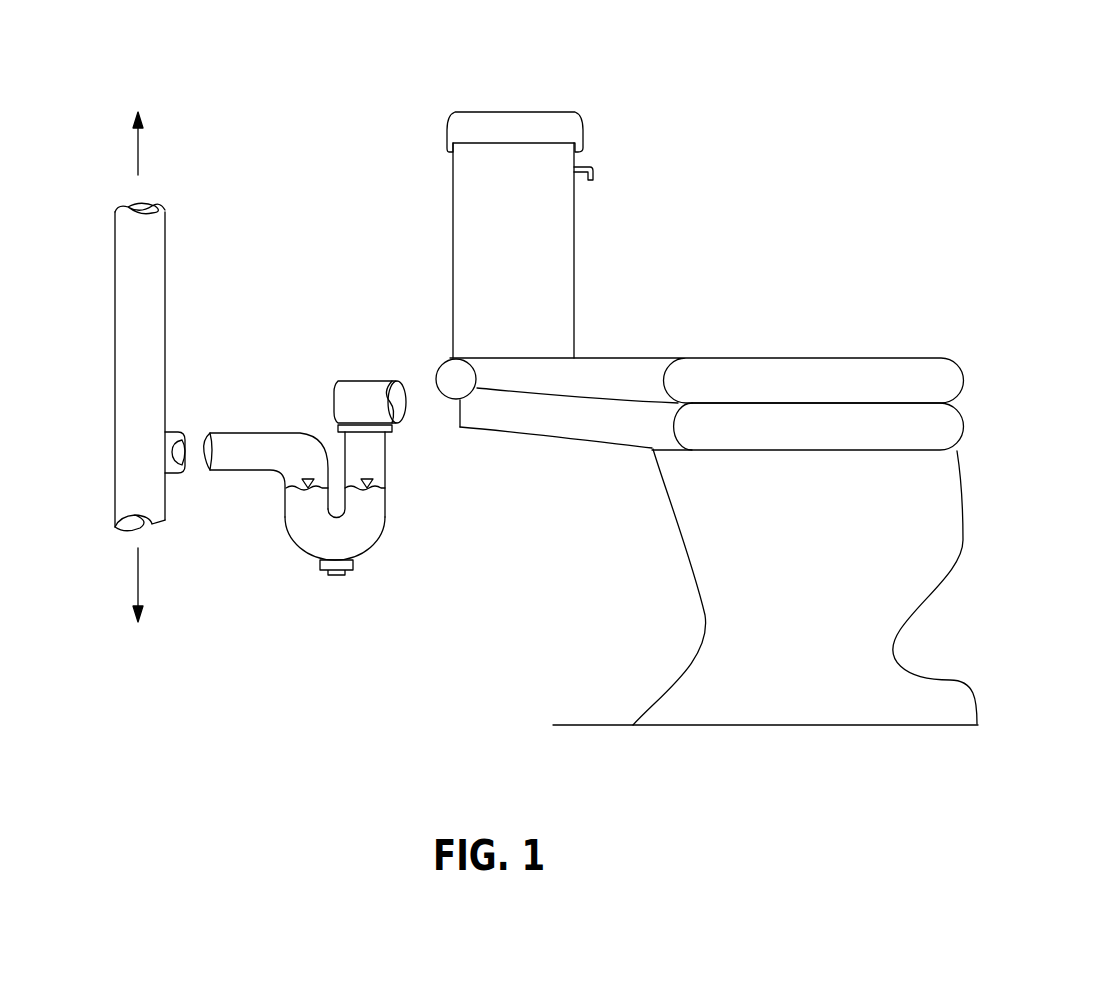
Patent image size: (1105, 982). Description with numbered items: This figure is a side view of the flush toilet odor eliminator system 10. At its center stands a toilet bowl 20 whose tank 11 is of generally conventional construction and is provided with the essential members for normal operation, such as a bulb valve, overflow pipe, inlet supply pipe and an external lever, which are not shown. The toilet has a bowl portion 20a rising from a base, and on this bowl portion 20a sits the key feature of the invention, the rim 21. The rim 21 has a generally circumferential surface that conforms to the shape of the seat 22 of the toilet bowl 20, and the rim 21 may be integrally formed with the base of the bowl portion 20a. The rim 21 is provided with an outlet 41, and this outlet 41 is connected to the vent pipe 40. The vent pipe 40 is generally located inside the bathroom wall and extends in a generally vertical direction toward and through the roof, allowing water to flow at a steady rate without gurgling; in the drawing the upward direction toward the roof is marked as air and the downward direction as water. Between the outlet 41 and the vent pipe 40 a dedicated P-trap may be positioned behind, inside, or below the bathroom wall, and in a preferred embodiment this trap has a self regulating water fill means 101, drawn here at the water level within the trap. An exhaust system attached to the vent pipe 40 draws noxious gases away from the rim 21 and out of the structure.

The flush toilet odor eliminator system 10 is at (814, 72).
The tank 11 is at (574, 247).
The toilet bowl 20 is at (764, 262).
The rim 21 is at (952, 407).
The seat 22 is at (960, 377).
The bowl portion 20a is at (963, 520).
The vent pipe 40 is at (100, 411).
The outlet 41 is at (403, 425).
The self regulating water fill means 101 is at (306, 476).